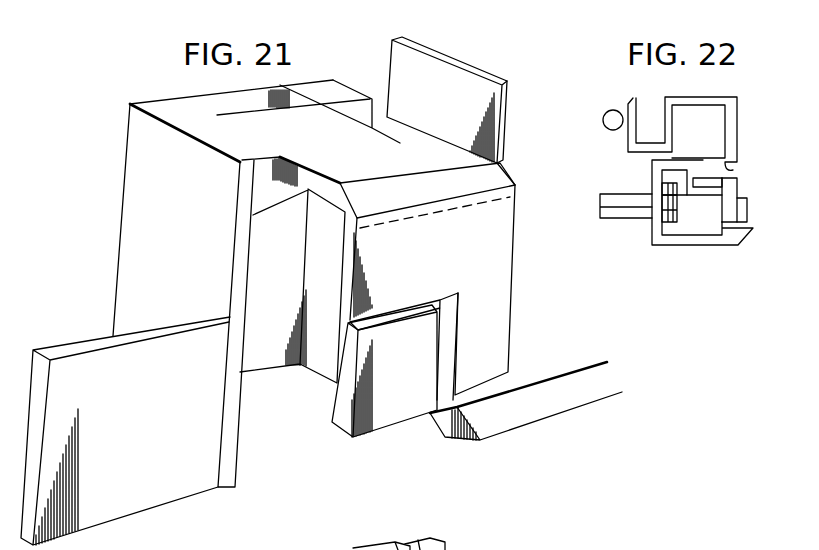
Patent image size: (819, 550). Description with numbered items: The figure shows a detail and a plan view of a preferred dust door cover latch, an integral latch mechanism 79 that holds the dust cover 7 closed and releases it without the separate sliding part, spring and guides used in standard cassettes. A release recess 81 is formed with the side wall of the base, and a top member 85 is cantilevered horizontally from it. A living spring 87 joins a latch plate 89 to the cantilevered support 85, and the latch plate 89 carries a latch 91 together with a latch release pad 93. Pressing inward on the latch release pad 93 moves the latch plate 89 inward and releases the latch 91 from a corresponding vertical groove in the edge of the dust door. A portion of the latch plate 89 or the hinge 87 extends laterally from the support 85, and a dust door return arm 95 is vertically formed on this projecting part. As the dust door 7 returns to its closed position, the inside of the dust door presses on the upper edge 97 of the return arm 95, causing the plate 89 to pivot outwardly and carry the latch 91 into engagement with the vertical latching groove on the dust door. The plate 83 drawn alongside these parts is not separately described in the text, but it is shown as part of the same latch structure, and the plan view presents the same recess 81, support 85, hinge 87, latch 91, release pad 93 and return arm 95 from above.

In FIG. 21, the integral latch mechanism 79 is at (106, 230).
In FIG. 21, the release recess 81 is at (252, 376).
In FIG. 22, the release recess 81 is at (735, 168).
In FIG. 21, the side plate 83 is at (82, 333).
In FIG. 21, the top member 85 is at (296, 134).
In FIG. 22, the top member 85 is at (709, 224).
In FIG. 21, the living spring 87 is at (377, 188).
In FIG. 22, the living spring 87 is at (738, 193).
In FIG. 21, the latch plate 89 is at (505, 282).
In FIG. 21, the latch 91 is at (458, 346).
In FIG. 22, the latch 91 is at (746, 179).
In FIG. 21, the latch release pad 93 is at (405, 404).
In FIG. 22, the latch release pad 93 is at (750, 209).
In FIG. 21, the dust door return arm 95 is at (508, 120).
In FIG. 22, the dust door return arm 95 is at (705, 177).
In FIG. 21, the upper edge 97 is at (478, 72).
In FIG. 21, the dust cover 7 is at (376, 546).